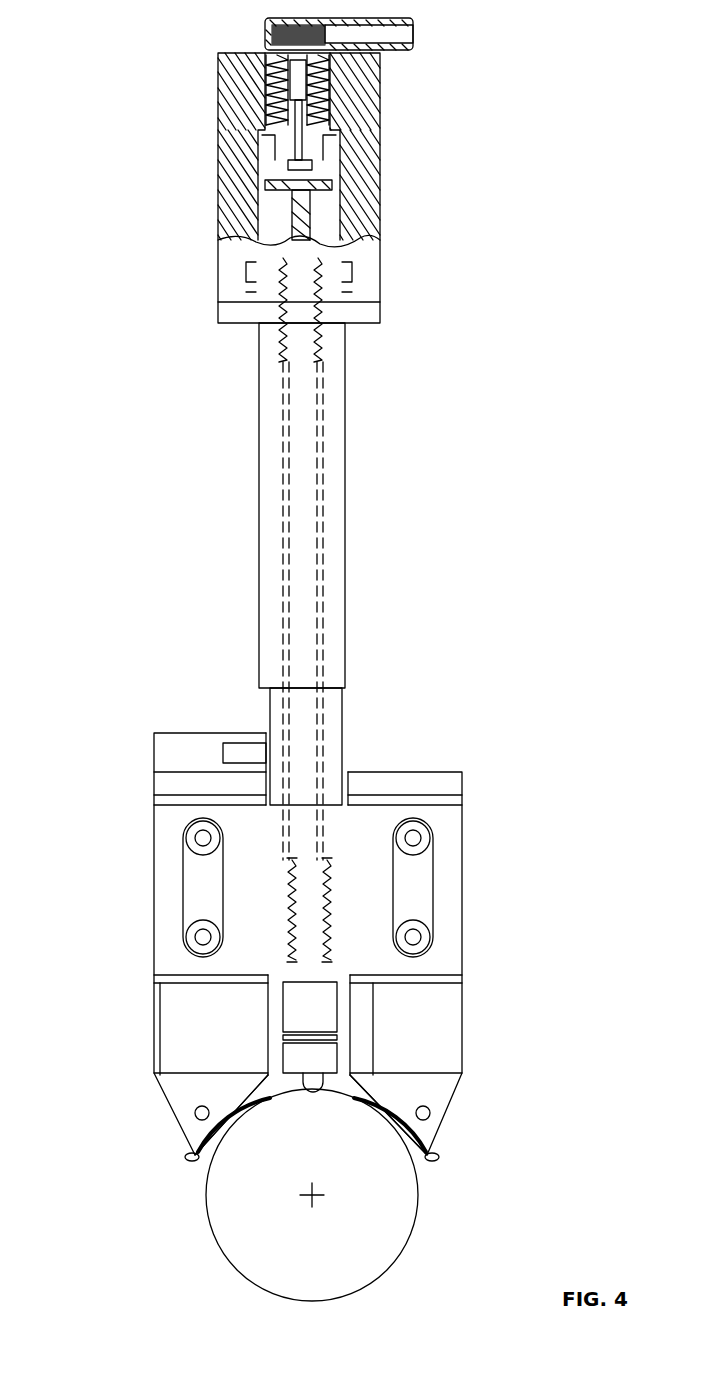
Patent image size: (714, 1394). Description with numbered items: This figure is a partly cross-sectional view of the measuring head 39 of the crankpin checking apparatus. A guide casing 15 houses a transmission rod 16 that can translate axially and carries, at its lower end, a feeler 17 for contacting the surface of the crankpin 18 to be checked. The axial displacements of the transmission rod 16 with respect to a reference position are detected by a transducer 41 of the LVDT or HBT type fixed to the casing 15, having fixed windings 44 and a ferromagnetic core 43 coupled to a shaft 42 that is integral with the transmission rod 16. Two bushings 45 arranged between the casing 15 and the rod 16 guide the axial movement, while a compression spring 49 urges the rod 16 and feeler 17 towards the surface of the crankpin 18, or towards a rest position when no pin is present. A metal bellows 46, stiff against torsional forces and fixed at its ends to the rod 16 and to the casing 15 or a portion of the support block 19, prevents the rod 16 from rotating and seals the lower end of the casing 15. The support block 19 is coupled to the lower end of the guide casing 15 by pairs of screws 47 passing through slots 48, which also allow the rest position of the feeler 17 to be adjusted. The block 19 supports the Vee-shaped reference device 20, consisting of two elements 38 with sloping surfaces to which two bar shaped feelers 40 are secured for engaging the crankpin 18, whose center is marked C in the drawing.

The transducer 41 is at (220, 45).
The shaft 42 is at (223, 78).
The ferromagnetic core 43 is at (378, 110).
The fixed windings 44 is at (380, 136).
The compression spring 49 is at (380, 185).
The bushings 45 is at (265, 298).
The guide casing 15 is at (272, 412).
The transmission rod 16 is at (302, 446).
The measuring head 39 is at (376, 426).
The support block 19 is at (362, 750).
The screws 47 is at (205, 918).
The slots 48 is at (190, 912).
The elements with sloping surfaces 38 is at (172, 1003).
The metal bellows 46 is at (315, 1013).
The feeler 17 is at (305, 1080).
The Vee-shaped reference device 20 is at (175, 1122).
The bar shaped feelers 40 is at (195, 1157).
The center axis C is at (318, 1195).
The crankpin 18 is at (362, 1243).